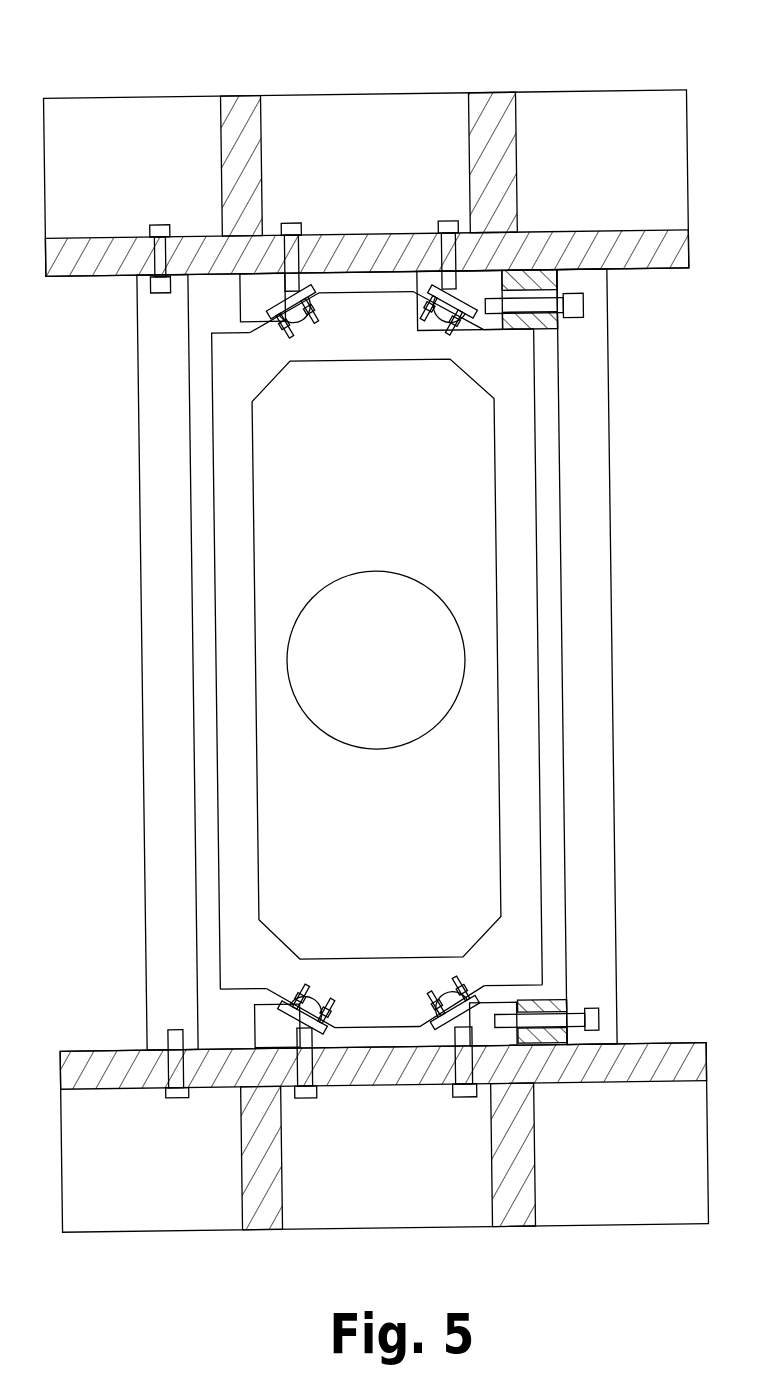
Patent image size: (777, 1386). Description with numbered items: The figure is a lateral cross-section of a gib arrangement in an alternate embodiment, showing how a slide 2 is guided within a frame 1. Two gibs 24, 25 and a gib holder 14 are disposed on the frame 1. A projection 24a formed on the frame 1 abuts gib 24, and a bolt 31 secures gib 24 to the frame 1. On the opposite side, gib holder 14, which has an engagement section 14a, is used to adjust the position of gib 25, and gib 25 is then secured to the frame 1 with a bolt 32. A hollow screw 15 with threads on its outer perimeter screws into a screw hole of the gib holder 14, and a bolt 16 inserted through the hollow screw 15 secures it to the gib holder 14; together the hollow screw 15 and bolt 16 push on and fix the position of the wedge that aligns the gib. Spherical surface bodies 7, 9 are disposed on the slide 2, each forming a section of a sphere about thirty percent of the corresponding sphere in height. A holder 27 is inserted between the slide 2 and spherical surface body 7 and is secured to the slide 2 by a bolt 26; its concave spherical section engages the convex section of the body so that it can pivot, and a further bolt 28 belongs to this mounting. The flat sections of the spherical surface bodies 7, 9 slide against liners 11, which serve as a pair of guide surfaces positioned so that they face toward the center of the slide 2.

The frame 1 is at (502, 97).
The slide 2 is at (525, 464).
The spherical surface body 7 is at (344, 315).
The spherical surface body 9 is at (313, 992).
The liner 11 is at (258, 311).
The gib holder 14 is at (540, 247).
The engagement section 14a is at (589, 236).
The hollow screw 15 is at (585, 291).
The bolt 16 is at (590, 310).
The gib 24 is at (263, 285).
The projection 24a is at (237, 265).
The gib 25 is at (480, 281).
The bolt 26 is at (301, 337).
The holder 27 is at (317, 284).
The bolt 28 is at (447, 339).
The bolt 31 is at (294, 221).
The bolt 32 is at (453, 223).